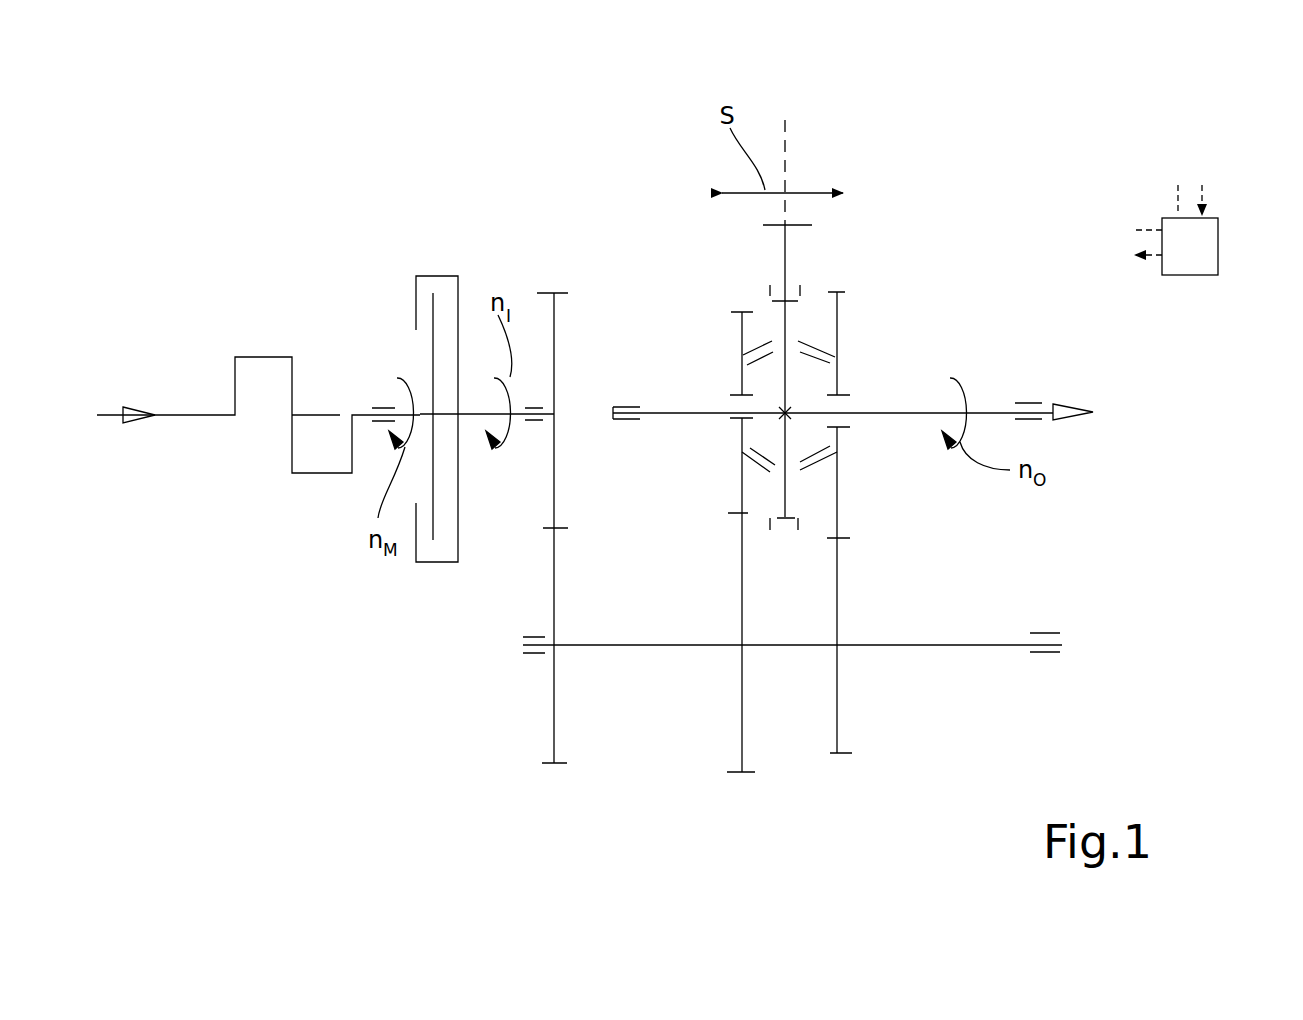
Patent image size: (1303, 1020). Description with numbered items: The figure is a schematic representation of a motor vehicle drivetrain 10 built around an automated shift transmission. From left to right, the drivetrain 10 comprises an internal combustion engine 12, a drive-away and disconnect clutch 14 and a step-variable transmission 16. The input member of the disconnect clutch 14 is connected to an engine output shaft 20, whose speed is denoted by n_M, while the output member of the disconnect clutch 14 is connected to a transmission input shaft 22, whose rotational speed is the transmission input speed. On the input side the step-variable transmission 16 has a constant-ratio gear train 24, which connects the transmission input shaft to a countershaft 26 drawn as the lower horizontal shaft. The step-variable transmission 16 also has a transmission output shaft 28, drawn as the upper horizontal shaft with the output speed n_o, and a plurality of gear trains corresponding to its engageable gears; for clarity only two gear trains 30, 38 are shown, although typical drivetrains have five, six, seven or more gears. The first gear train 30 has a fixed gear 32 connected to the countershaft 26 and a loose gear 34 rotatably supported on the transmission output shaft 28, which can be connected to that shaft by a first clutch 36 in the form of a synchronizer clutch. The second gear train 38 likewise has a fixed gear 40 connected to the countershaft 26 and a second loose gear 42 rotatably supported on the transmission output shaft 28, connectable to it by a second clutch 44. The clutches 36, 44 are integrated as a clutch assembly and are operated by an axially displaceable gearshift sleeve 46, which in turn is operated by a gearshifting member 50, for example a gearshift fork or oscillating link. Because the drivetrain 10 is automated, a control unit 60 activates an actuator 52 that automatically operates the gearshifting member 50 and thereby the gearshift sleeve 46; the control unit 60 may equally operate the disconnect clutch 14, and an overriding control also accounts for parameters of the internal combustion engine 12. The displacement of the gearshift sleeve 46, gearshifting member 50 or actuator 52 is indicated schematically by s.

The drivetrain 10 is at (1084, 225).
The internal combustion engine 12 is at (265, 308).
The drive-away and disconnect clutch 14 is at (447, 232).
The step-variable transmission 16 is at (641, 201).
The engine output shaft 20 is at (370, 422).
The transmission input shaft 22 is at (473, 420).
The constant-ratio gear train 24 is at (552, 774).
The countershaft 26 is at (643, 646).
The transmission output shaft 28 is at (987, 408).
The first gear train 30 is at (740, 782).
The fixed gear 32 is at (742, 729).
The loose gear 34 is at (742, 485).
The first clutch 36 is at (763, 326).
The second gear train 38 is at (840, 762).
The fixed gear 40 is at (837, 702).
The second loose gear 42 is at (837, 498).
The second clutch 44 is at (815, 326).
The gearshift sleeve 46 is at (787, 525).
The gearshifting member 50 is at (787, 252).
The actuator 52 is at (787, 130).
The control unit 60 is at (1198, 247).